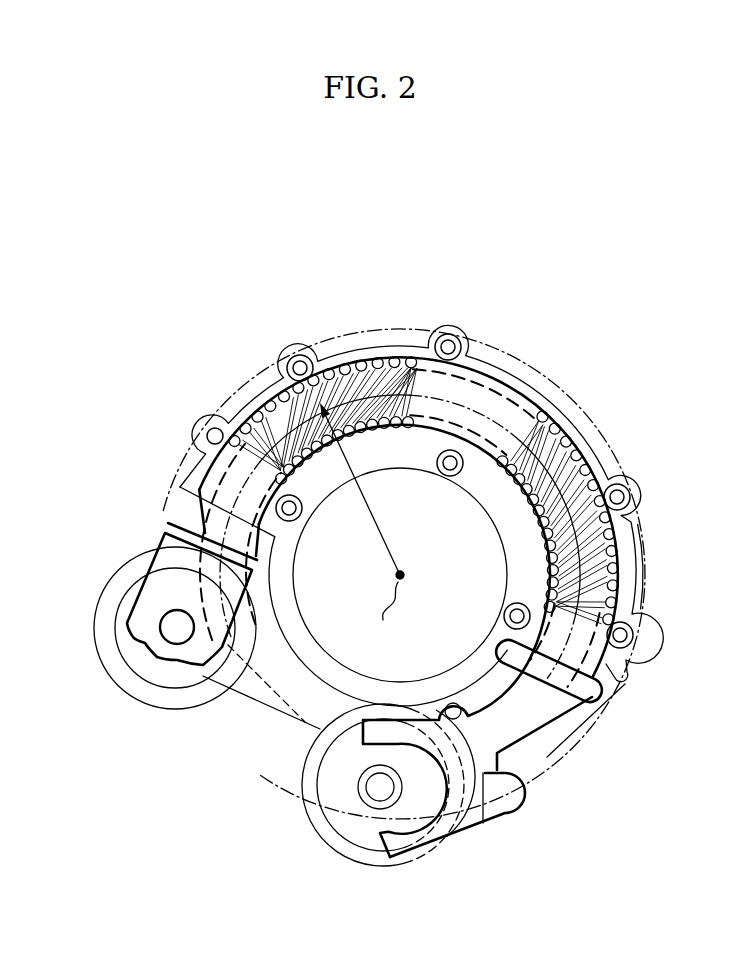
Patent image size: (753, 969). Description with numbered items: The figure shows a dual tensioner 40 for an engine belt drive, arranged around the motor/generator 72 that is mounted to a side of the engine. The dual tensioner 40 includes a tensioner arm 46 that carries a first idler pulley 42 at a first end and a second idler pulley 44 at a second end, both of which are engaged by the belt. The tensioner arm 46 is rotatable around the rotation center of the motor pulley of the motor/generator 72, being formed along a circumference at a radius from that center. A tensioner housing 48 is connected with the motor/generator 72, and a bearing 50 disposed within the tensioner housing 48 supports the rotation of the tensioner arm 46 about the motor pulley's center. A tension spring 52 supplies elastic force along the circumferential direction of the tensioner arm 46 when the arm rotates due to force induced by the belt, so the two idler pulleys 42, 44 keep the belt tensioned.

The dual tensioner 40 is at (383, 300).
The first idler pulley 42 is at (100, 612).
The second idler pulley 44 is at (366, 865).
The tensioner arm 46 is at (537, 710).
The tensioner housing 48 is at (530, 393).
The bearing 50 is at (490, 388).
The tension spring 52 is at (267, 413).
The motor/generator 72 is at (228, 748).